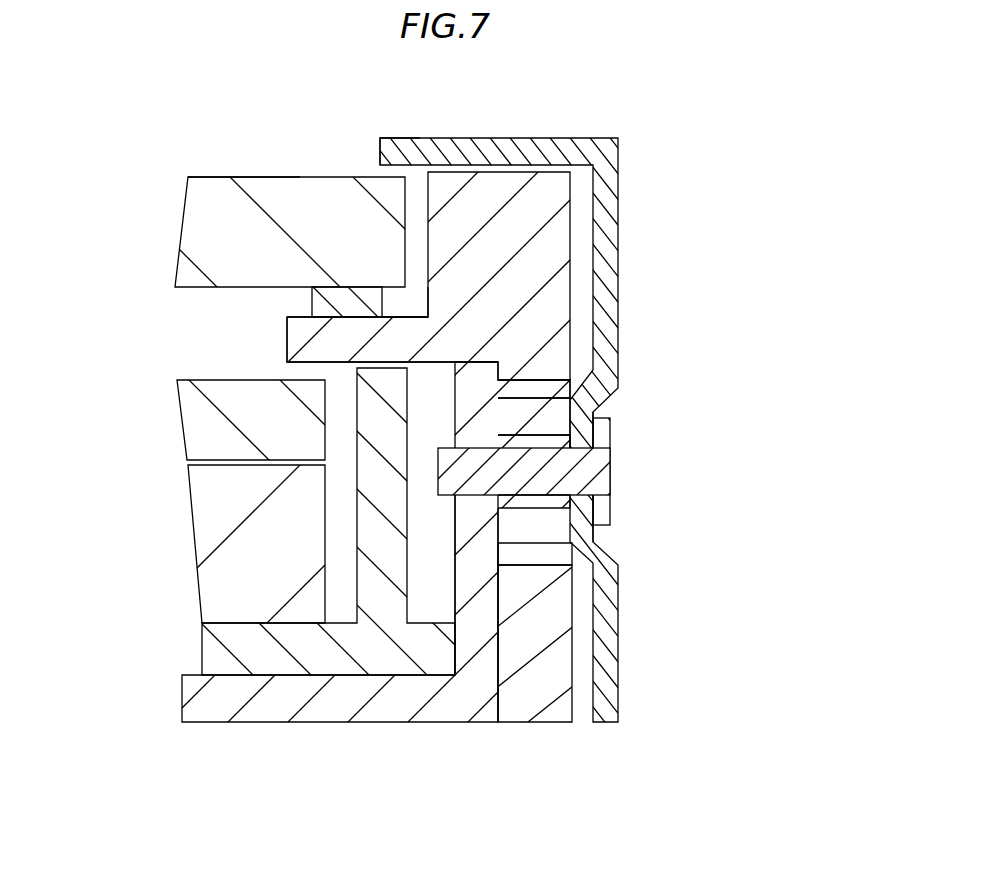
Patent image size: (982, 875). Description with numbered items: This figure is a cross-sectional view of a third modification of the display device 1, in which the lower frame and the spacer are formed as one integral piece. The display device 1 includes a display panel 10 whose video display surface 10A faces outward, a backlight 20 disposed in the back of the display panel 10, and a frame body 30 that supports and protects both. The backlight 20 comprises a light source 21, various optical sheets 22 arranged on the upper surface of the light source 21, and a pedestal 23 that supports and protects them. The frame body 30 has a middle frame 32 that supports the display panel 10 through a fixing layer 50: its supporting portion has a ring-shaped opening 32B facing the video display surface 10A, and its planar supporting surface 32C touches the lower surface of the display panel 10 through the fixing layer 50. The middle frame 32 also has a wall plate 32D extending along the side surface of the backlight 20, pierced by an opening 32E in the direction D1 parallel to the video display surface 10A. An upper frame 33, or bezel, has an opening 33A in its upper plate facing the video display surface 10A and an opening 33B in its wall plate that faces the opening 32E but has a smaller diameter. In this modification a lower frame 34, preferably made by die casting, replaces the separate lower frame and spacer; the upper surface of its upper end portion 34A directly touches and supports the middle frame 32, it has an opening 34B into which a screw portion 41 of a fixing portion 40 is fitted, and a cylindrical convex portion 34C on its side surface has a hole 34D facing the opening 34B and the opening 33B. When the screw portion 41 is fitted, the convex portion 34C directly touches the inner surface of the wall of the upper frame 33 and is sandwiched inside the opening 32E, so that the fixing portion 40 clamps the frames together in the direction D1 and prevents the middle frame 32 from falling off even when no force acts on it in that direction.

The display device 1 is at (725, 125).
The display panel 10 is at (200, 230).
The video display surface 10A is at (282, 175).
The fixing layer 50 is at (345, 300).
The backlight 20 is at (70, 477).
The light source 21 is at (212, 540).
The optical sheets 22 is at (197, 440).
The pedestal 23 is at (213, 650).
The frame body 30 is at (623, 790).
The middle frame 32 is at (530, 722).
The opening 32B is at (235, 325).
The supporting surface 32C is at (410, 315).
The wall plate 32D is at (540, 668).
The opening 32E is at (548, 568).
The upper frame 33 is at (607, 722).
The opening 33A is at (363, 148).
The opening 33B is at (600, 500).
The lower frame 34 is at (470, 722).
The upper end portion 34A is at (465, 360).
The opening 34B is at (478, 500).
The convex portion 34C is at (605, 425).
The hole 34D is at (547, 432).
The fixing portion 40 is at (552, 470).
The screw portion 41 is at (580, 472).
The direction D1 is at (755, 477).